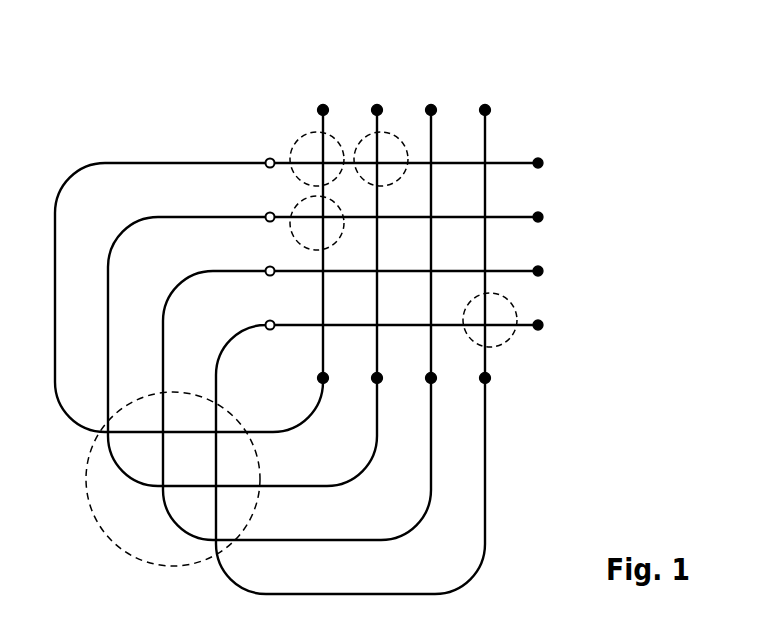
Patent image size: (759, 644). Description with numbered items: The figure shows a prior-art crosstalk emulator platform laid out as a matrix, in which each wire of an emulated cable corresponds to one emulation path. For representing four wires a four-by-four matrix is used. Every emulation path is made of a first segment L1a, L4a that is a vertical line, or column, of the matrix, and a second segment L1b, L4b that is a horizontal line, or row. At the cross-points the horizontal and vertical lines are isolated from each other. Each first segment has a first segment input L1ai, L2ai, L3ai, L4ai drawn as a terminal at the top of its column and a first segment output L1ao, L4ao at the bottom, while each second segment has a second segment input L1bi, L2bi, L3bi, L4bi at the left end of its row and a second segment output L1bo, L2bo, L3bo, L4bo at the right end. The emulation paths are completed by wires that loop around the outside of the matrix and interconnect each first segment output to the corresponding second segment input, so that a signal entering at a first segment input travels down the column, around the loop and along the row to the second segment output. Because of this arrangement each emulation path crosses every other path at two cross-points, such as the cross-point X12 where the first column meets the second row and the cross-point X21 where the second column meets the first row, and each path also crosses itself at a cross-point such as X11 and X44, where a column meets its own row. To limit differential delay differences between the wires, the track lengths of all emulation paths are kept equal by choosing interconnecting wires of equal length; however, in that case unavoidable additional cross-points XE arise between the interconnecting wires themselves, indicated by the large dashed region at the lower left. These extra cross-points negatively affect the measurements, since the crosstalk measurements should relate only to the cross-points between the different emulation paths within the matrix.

The first segment L1a is at (322, 117).
The first segment L4a is at (488, 130).
The second segment L1b is at (517, 160).
The second segment L4b is at (443, 327).
The first segment input L1ai is at (320, 94).
The first segment input L2ai is at (375, 78).
The first segment input L3ai is at (430, 94).
The first segment input L4ai is at (484, 78).
The first segment output L1ao is at (290, 375).
The first segment output L4ao is at (520, 394).
The second segment input L1bi is at (241, 147).
The second segment input L2bi is at (241, 201).
The second segment input L3bi is at (241, 256).
The second segment input L4bi is at (241, 310).
The second segment output L1bo is at (579, 159).
The second segment output L2bo is at (579, 213).
The second segment output L3bo is at (579, 267).
The second segment output L4bo is at (579, 321).
The cross-point X11 is at (297, 139).
The cross-point X12 is at (296, 243).
The cross-point X21 is at (363, 177).
The cross-point X44 is at (510, 340).
The additional cross-points XE is at (83, 478).